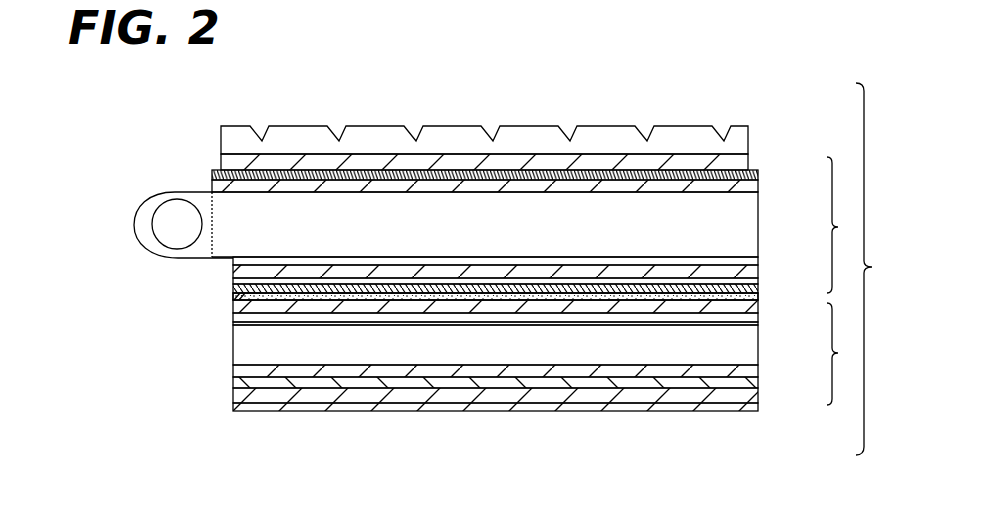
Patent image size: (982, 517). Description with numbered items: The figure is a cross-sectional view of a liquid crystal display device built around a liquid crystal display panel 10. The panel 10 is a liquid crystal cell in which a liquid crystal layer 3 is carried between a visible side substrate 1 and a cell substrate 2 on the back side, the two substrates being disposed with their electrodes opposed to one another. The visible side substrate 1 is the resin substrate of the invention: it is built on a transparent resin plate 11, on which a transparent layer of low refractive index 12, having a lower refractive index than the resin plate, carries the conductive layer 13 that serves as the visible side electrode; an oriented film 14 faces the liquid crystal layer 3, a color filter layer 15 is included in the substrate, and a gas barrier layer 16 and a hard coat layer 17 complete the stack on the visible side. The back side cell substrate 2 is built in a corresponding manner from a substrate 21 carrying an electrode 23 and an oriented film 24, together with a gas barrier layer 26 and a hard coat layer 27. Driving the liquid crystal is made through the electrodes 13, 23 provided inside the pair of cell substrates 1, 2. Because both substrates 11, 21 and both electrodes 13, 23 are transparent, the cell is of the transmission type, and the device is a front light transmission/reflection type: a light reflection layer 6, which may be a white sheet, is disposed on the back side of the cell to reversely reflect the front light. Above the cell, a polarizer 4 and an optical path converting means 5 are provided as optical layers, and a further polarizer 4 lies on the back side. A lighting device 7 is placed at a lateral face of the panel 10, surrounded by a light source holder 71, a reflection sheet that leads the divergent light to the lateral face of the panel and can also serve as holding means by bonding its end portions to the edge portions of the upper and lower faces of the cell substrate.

The liquid crystal display panel 10 is at (877, 269).
The visible side substrate 1 is at (840, 225).
The cell substrate on the back side 2 is at (840, 354).
The liquid crystal layer 3 is at (571, 298).
The polarizer 4 is at (748, 162).
The optical path converting means 5 is at (748, 137).
The light reflection layer 6 is at (758, 406).
The lighting device 7 is at (168, 229).
The light source holder 71 is at (168, 192).
The transparent resin plate 11 is at (758, 208).
The transparent layer of low refractive index 12 is at (758, 260).
The conductive layer 13 is at (758, 288).
The oriented film 14 is at (758, 297).
The color filter layer 15 is at (758, 272).
The gas barrier layer 16 is at (758, 186).
The hard coat layer 17 is at (758, 175).
The substrate 21 is at (758, 343).
The electrode 23 is at (758, 318).
The oriented film 24 is at (758, 307).
The gas barrier layer 26 is at (758, 371).
The hard coat layer 27 is at (758, 383).